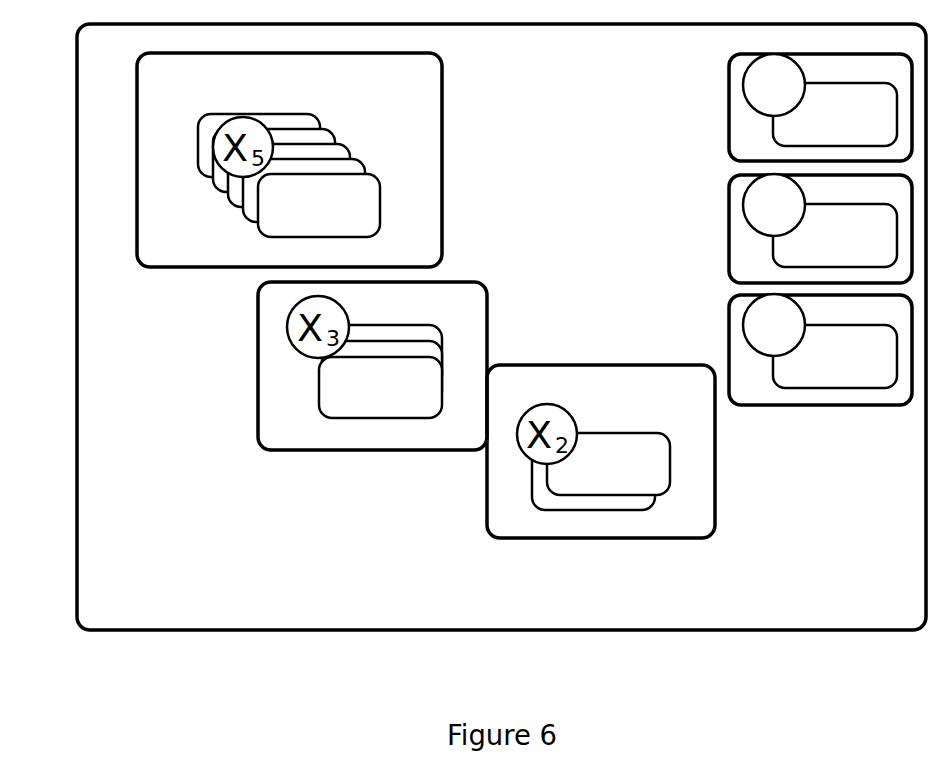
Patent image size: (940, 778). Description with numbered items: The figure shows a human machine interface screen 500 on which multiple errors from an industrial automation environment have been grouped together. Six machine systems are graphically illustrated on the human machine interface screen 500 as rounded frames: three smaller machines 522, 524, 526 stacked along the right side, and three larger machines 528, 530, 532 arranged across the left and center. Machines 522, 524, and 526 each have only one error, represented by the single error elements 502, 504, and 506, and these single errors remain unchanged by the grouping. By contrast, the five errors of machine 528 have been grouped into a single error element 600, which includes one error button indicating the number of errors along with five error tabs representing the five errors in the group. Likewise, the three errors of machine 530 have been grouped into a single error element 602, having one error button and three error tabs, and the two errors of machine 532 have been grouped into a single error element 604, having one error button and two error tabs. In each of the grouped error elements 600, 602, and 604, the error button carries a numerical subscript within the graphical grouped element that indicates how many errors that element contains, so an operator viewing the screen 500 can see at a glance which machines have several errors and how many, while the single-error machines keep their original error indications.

The human machine interface screen 500 is at (518, 610).
The error element 502 is at (752, 112).
The error element 504 is at (752, 232).
The error element 506 is at (752, 352).
The machine system 522 is at (881, 79).
The machine system 524 is at (881, 199).
The machine system 526 is at (881, 320).
The machine system 528 is at (185, 262).
The machine system 530 is at (306, 442).
The machine system 532 is at (533, 535).
The grouped error element 600 is at (307, 140).
The grouped error element 602 is at (442, 323).
The grouped error element 604 is at (617, 498).